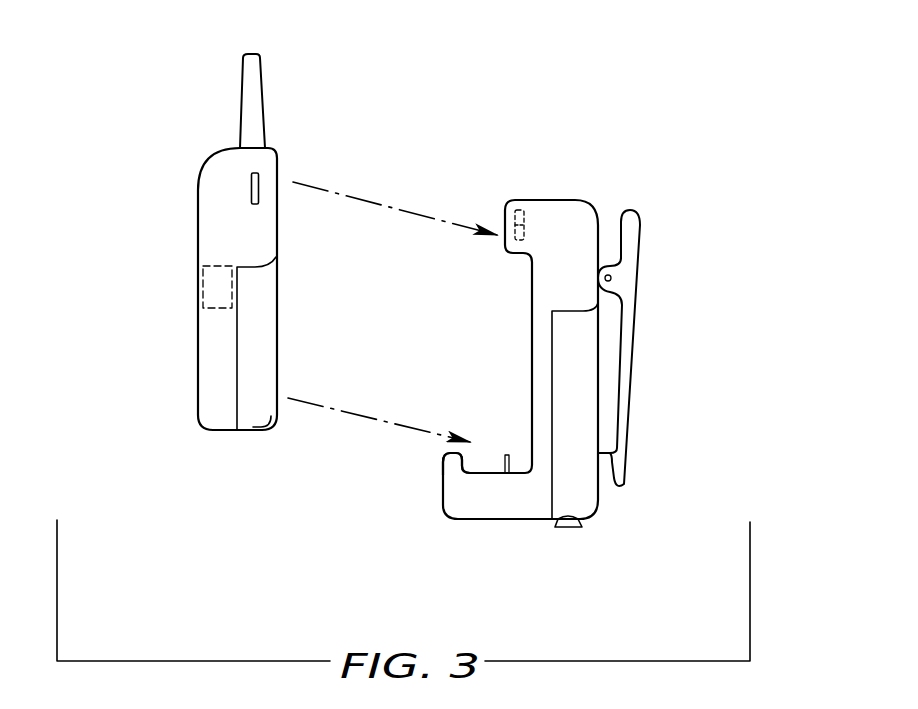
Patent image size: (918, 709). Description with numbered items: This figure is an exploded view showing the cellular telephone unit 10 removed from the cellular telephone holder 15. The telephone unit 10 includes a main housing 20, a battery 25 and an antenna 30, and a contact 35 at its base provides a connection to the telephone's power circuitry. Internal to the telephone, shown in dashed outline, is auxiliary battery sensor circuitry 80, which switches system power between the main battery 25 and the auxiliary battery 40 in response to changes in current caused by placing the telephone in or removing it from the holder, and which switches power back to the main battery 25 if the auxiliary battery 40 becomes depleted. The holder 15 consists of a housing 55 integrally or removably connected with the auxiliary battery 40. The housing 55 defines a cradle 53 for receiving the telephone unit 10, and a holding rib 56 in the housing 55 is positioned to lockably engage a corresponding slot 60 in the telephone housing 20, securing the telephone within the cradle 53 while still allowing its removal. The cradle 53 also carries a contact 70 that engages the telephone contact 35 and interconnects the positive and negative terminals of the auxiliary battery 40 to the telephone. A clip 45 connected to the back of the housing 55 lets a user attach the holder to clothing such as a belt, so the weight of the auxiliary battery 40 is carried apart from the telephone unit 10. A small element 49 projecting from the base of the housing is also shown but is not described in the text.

The cellular telephone unit 10 is at (186, 167).
The cellular telephone holder 15 is at (652, 200).
The main housing 20 is at (210, 360).
The battery 25 is at (268, 329).
The antenna 30 is at (246, 76).
The contact 35 is at (268, 434).
The auxiliary battery 40 is at (585, 403).
The clip 45 is at (627, 283).
The pivot peg 49 is at (571, 530).
The cradle 53 is at (482, 470).
The housing 55 is at (568, 215).
The holding rib 56 is at (499, 213).
The slot 60 is at (251, 188).
The contact 70 is at (507, 455).
The auxiliary battery sensor circuitry 80 is at (203, 281).